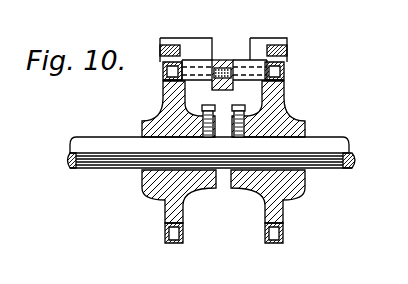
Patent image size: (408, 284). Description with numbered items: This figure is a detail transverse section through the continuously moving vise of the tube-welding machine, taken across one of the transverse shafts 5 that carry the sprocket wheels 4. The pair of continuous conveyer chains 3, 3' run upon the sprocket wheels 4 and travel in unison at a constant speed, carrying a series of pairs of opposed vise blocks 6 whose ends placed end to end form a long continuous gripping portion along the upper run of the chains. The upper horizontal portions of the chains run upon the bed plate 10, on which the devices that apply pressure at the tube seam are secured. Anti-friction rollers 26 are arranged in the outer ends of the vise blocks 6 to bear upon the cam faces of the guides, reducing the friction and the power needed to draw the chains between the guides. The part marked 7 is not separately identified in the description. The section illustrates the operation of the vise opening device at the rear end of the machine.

The conveyer chain 3 is at (161, 248).
The conveyer chain 3' is at (292, 235).
The sprocket wheel 4 is at (163, 113).
The transverse shaft 5 is at (326, 138).
The vise block 6 is at (272, 62).
The cap plate 7 is at (197, 52).
The bed plate 10 is at (224, 68).
The anti-friction roller 26 is at (160, 50).